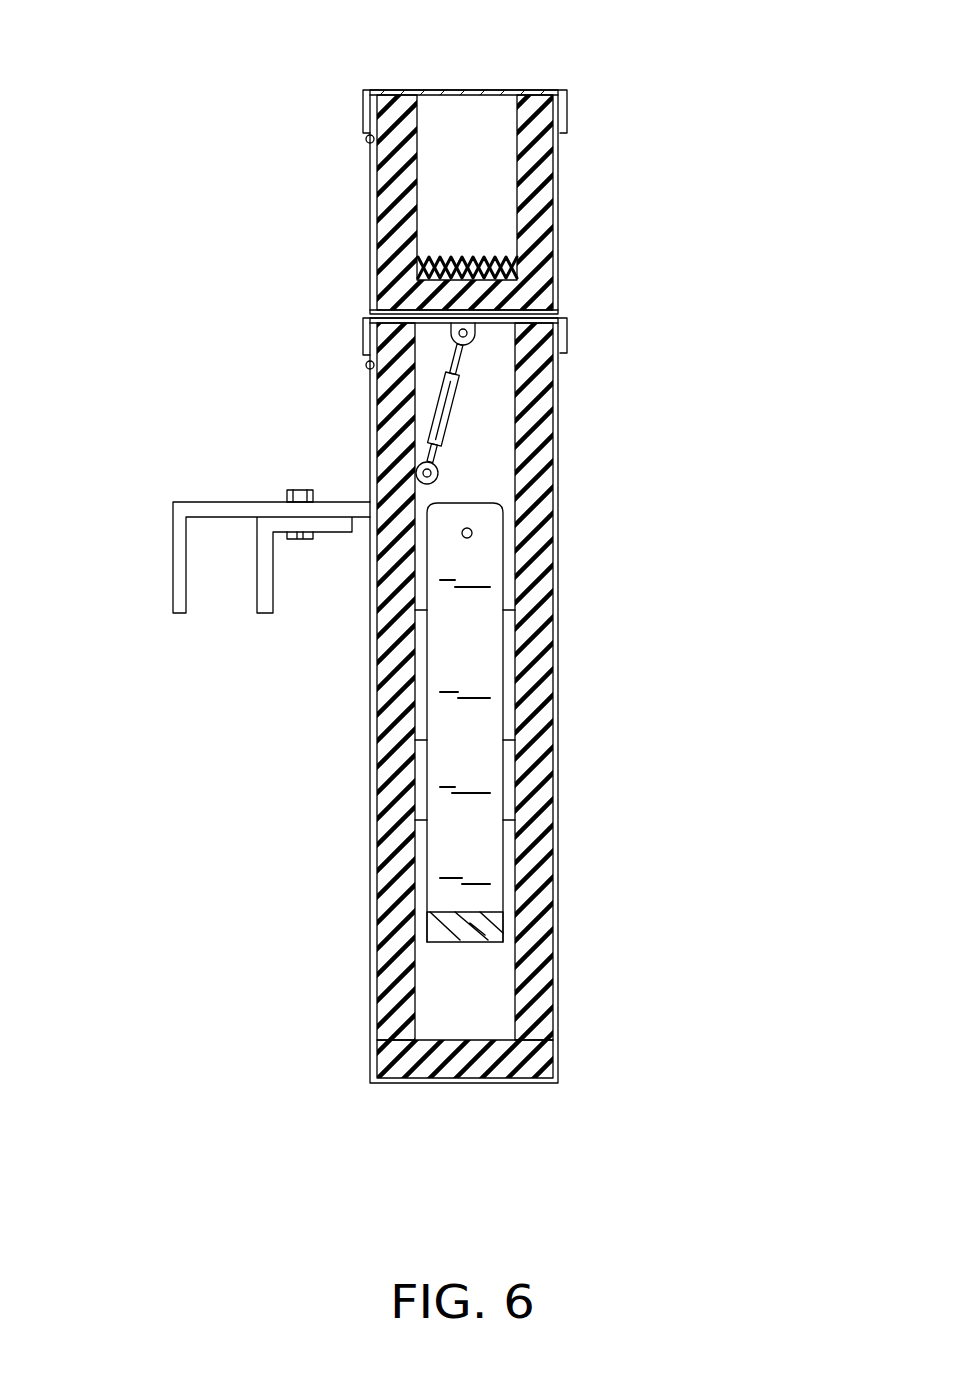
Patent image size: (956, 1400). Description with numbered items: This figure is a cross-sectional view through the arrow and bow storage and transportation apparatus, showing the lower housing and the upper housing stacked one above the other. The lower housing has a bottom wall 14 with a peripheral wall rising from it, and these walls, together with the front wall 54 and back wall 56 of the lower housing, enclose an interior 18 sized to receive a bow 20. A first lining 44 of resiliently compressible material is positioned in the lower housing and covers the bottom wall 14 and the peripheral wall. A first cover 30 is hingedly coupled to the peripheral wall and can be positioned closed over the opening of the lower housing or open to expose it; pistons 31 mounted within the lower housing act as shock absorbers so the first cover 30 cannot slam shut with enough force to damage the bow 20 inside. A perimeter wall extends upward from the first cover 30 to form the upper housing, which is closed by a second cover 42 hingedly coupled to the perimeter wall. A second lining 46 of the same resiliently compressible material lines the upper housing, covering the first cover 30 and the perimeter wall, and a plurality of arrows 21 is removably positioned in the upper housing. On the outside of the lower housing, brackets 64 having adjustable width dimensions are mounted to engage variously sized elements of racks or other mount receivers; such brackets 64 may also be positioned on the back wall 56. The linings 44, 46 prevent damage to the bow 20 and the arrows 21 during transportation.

The bottom wall 14 is at (470, 1085).
The interior 18 is at (465, 490).
The bow 20 is at (515, 942).
The arrows 21 is at (430, 265).
The first cover 30 is at (488, 322).
The pistons 31 is at (453, 414).
The second cover 42 is at (483, 90).
The first lining 44 is at (558, 1013).
The second lining 46 is at (548, 204).
The front wall 54 is at (558, 640).
The back wall 56 is at (370, 1010).
The brackets 64 is at (172, 543).